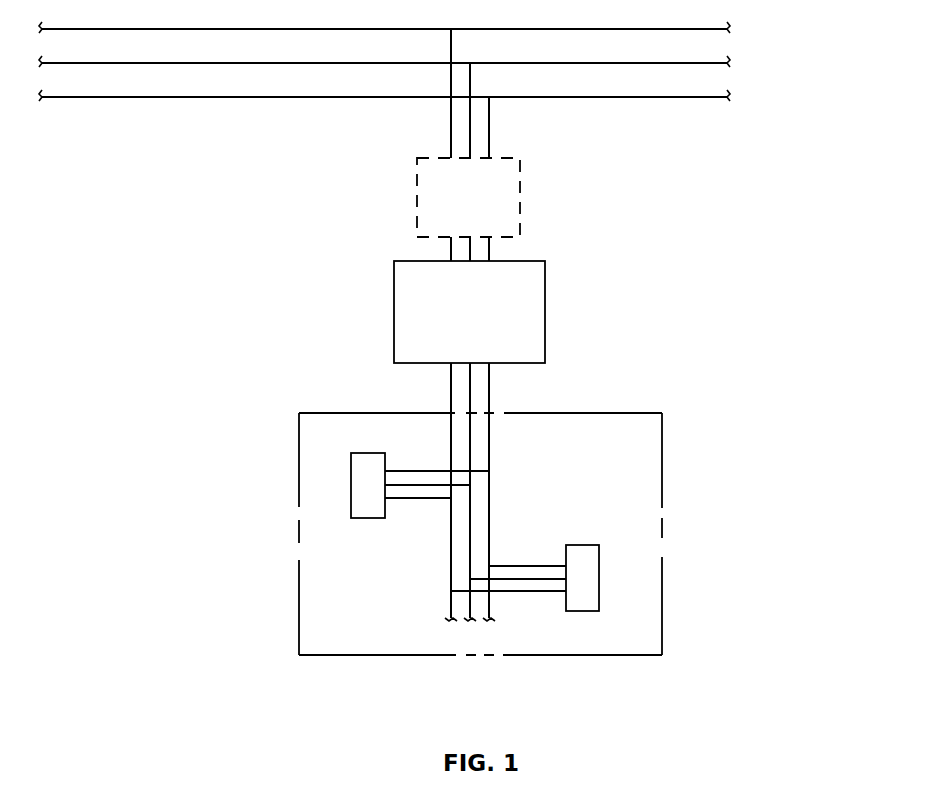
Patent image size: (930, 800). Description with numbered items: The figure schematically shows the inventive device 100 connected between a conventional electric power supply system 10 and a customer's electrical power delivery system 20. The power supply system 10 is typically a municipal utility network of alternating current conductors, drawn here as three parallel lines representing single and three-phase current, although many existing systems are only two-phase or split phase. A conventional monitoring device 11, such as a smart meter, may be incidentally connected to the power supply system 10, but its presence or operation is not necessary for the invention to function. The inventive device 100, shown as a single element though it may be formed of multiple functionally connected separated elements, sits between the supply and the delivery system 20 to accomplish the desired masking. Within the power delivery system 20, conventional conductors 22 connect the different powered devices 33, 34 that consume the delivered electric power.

The electric power supply system 10 is at (758, 22).
The monitoring device 11 is at (520, 190).
The inventive device 100 is at (545, 318).
The power delivery system 20 is at (662, 607).
The conductors 22 is at (489, 508).
The powered device 33 is at (575, 545).
The powered device 34 is at (371, 518).